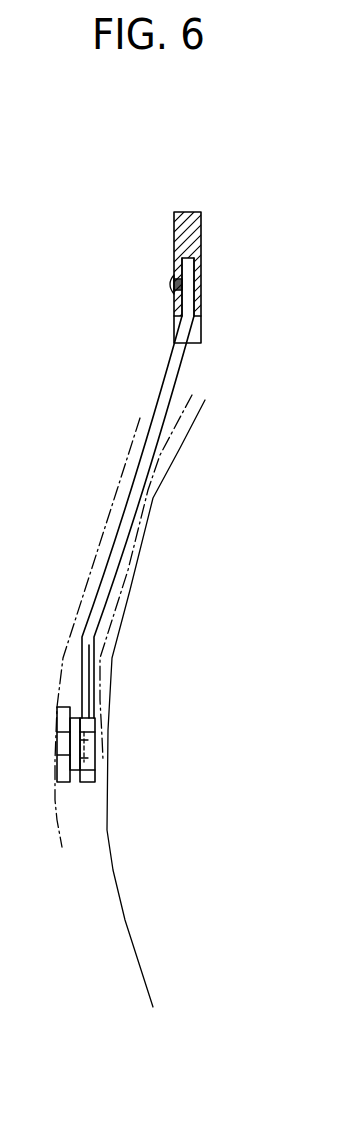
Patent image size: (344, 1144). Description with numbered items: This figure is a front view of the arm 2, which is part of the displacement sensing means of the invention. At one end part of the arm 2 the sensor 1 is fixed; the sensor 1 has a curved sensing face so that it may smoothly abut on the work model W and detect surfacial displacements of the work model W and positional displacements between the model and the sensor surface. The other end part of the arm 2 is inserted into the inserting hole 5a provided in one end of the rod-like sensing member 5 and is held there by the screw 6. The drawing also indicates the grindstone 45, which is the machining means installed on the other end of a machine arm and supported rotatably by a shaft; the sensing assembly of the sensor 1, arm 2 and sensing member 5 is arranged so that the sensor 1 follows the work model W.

The sensor 1 is at (57, 747).
The arm 2 is at (118, 552).
The rod-like sensing member 5 is at (201, 227).
The inserting hole 5a is at (203, 269).
The screw 6 is at (166, 284).
The work model W is at (58, 792).
The grindstone 45 is at (133, 947).